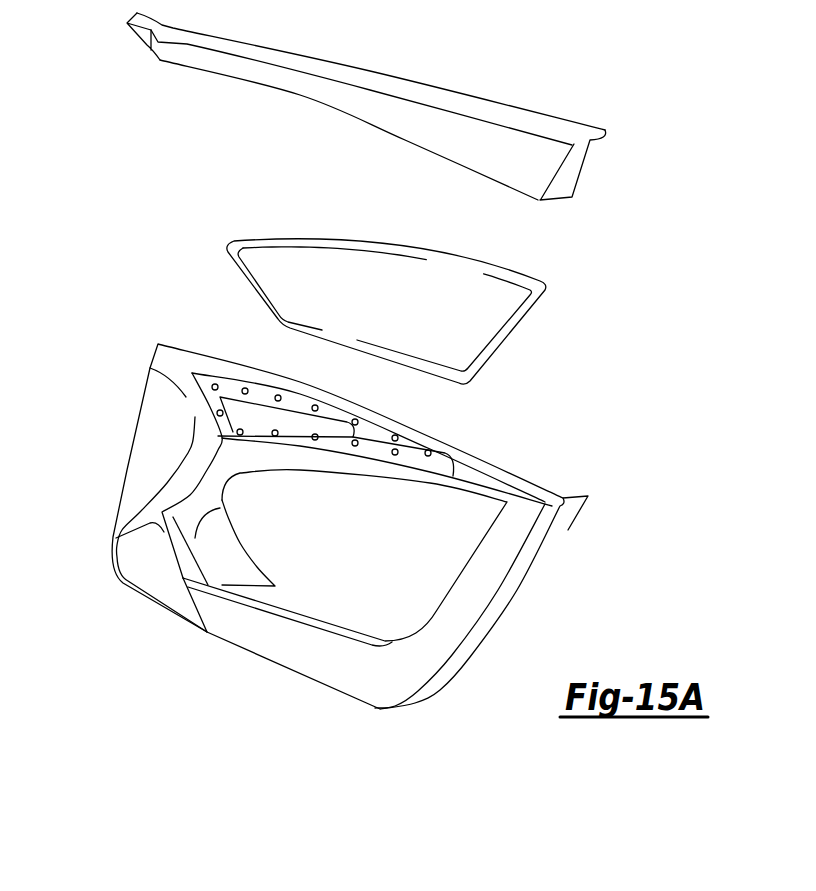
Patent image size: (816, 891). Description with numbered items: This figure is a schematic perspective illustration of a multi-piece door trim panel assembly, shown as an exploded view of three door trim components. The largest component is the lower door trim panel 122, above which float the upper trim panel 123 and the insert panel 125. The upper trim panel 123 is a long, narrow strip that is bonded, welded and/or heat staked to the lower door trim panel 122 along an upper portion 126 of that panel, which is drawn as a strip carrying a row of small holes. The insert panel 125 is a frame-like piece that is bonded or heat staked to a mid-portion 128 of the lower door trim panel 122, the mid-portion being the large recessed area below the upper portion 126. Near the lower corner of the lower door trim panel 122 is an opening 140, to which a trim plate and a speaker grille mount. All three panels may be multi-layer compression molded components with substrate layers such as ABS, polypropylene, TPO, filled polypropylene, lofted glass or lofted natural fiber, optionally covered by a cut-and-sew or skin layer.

The lower door trim panel 122 is at (278, 668).
The upper trim panel 123 is at (380, 66).
The insert panel 125 is at (507, 335).
The upper portion 126 is at (343, 404).
The mid-portion 128 is at (290, 472).
The opening 140 is at (118, 558).